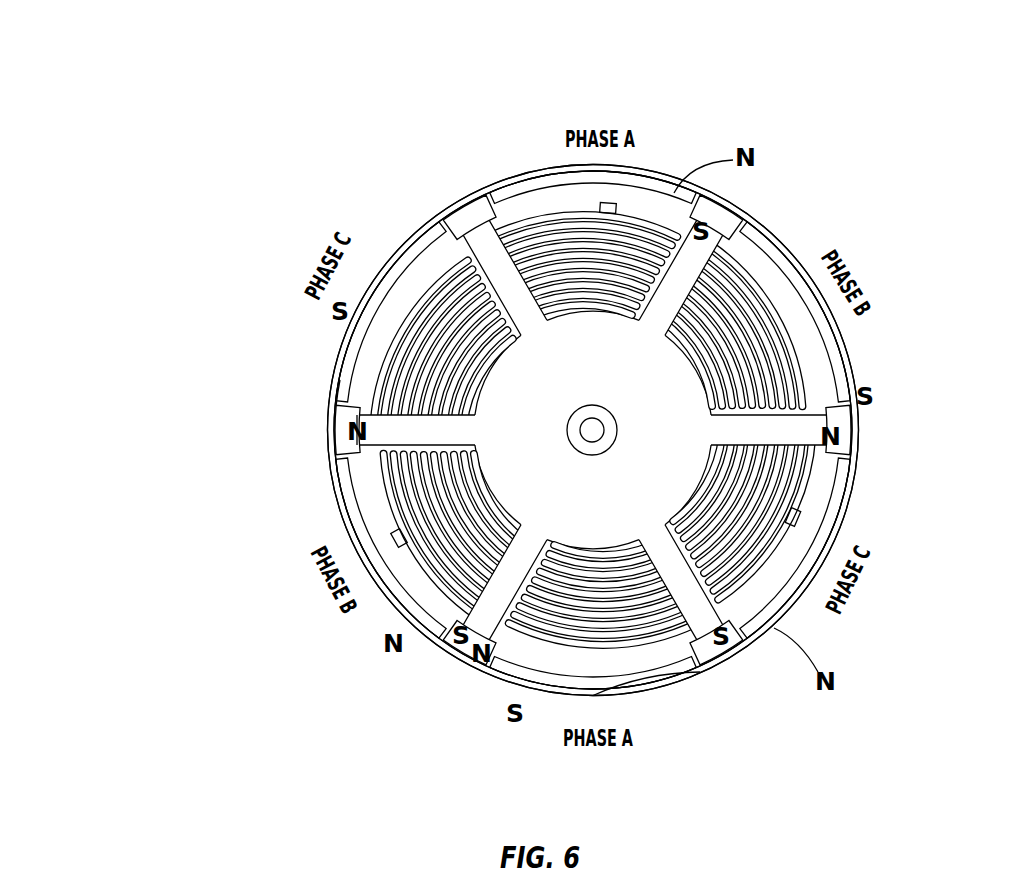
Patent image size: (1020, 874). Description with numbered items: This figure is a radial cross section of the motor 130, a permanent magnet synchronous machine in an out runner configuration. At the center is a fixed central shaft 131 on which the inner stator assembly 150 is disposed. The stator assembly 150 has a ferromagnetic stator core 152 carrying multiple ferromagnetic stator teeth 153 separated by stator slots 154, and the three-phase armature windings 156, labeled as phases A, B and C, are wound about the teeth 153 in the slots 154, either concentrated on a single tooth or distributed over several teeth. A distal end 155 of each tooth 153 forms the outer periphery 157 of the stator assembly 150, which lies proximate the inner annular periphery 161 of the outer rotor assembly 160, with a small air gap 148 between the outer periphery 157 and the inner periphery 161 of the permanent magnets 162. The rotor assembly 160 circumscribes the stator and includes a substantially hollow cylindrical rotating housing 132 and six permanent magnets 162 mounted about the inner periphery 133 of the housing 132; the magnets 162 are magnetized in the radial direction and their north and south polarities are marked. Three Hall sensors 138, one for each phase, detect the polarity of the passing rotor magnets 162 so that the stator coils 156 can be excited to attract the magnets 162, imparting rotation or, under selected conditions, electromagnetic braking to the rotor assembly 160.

The motor 130 is at (512, 60).
The fixed central shaft 131 is at (662, 445).
The rotating housing 132 is at (335, 181).
The inner periphery of the rotating housing 133 is at (641, 692).
The Hall sensors 138 is at (614, 206).
The air gap 148 is at (356, 404).
The inner stator assembly 150 is at (605, 377).
The ferromagnetic stator core 152 is at (540, 422).
The stator teeth 153 is at (464, 236).
The stator slots 154 is at (490, 262).
The distal end of stator tooth 155 is at (431, 262).
The armature windings 156 is at (606, 282).
The outer periphery of the stator assembly 157 is at (437, 262).
The rotor assembly 160 is at (802, 178).
The inner annular periphery of the rotor assembly 161 is at (352, 381).
The permanent magnets 162 is at (226, 659).